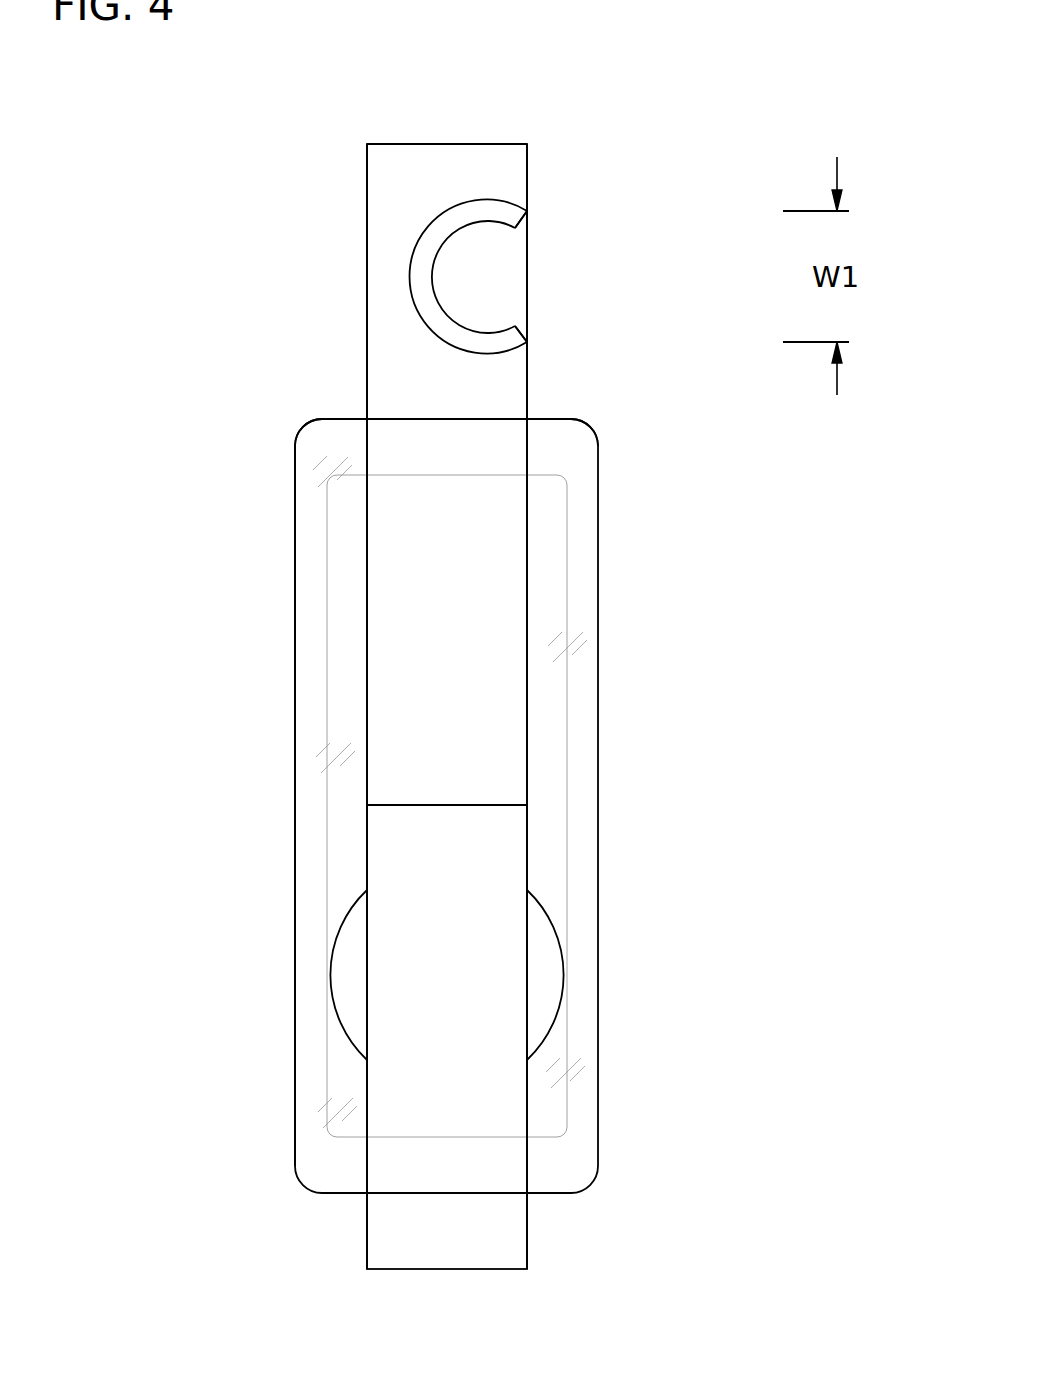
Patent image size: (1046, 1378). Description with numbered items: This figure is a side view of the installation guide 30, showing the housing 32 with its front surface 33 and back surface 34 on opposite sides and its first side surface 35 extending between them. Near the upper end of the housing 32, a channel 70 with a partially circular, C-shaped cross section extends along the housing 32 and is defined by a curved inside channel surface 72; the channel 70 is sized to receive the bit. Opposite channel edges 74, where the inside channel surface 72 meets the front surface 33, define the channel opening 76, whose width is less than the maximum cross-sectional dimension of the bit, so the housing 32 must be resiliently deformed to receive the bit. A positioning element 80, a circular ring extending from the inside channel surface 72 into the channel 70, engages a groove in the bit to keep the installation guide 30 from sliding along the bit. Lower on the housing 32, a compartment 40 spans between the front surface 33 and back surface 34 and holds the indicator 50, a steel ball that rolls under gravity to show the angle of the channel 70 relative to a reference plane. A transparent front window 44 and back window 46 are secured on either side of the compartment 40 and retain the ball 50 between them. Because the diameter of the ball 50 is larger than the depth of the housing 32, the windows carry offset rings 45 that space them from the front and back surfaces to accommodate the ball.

The installation guide 30 is at (805, 730).
The housing 32 is at (382, 158).
The front surface 33 is at (527, 168).
The back surface 34 is at (367, 228).
The first side surface 35 is at (463, 557).
The compartment 40 is at (357, 688).
The front window 44 is at (580, 578).
The offset rings 45 is at (345, 440).
The back window 46 is at (307, 604).
The indicator 50 is at (563, 985).
The channel 70 is at (477, 307).
The inside channel surface 72 is at (413, 302).
The channel edges 74 is at (527, 212).
The channel opening 76 is at (505, 277).
The positioning element 80 is at (478, 214).